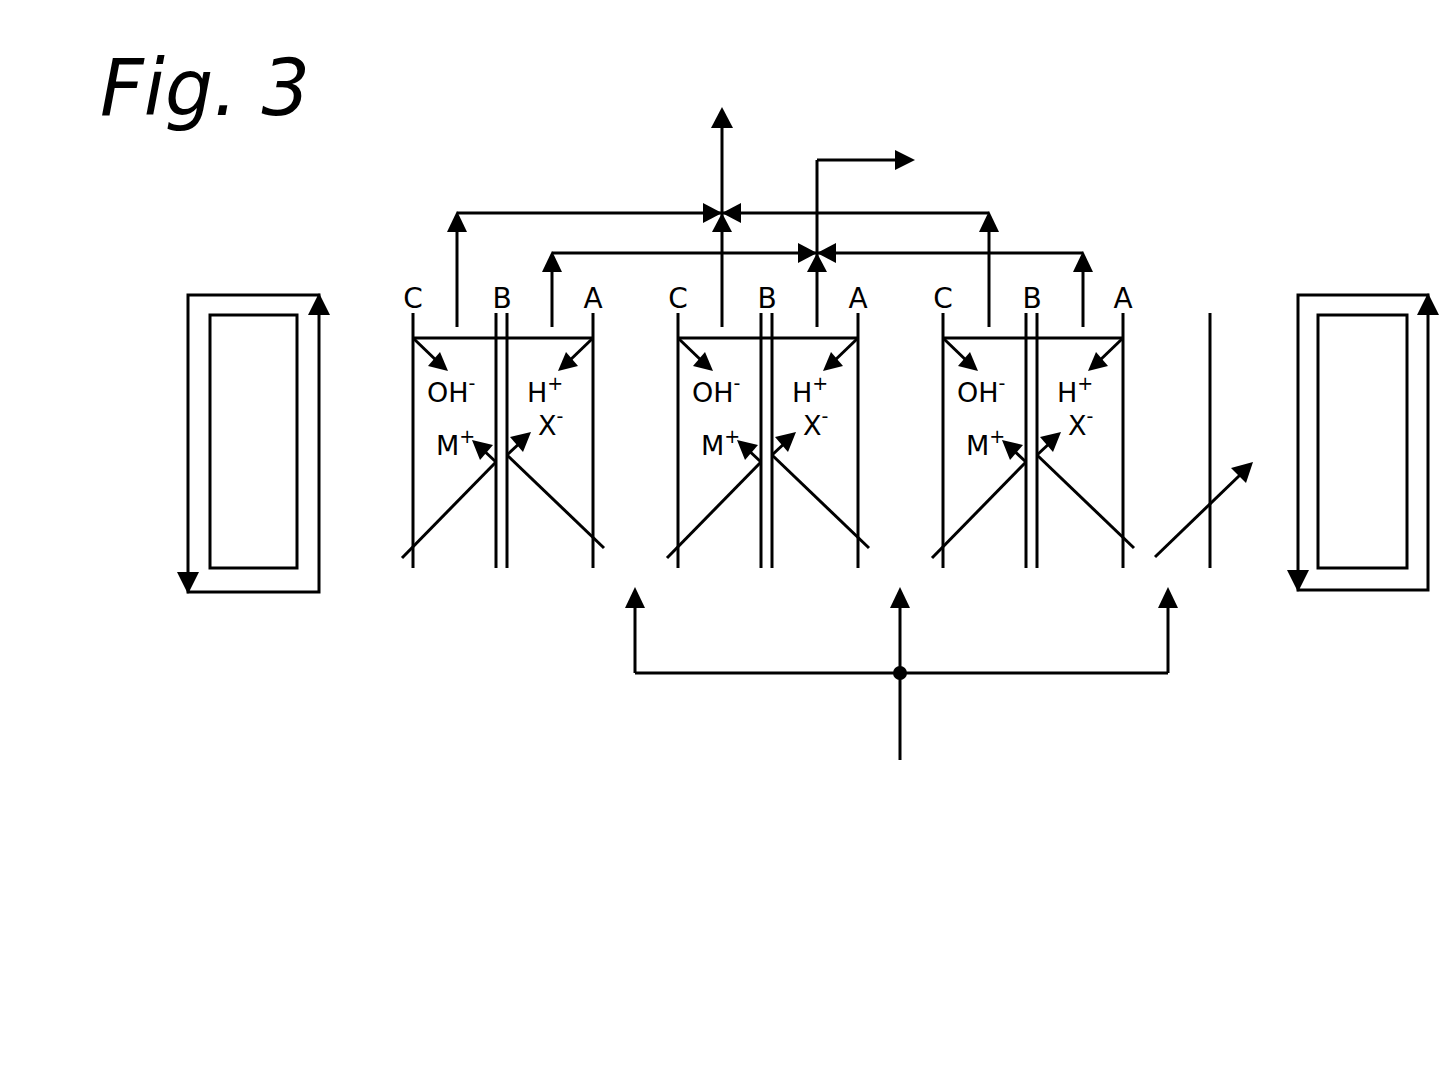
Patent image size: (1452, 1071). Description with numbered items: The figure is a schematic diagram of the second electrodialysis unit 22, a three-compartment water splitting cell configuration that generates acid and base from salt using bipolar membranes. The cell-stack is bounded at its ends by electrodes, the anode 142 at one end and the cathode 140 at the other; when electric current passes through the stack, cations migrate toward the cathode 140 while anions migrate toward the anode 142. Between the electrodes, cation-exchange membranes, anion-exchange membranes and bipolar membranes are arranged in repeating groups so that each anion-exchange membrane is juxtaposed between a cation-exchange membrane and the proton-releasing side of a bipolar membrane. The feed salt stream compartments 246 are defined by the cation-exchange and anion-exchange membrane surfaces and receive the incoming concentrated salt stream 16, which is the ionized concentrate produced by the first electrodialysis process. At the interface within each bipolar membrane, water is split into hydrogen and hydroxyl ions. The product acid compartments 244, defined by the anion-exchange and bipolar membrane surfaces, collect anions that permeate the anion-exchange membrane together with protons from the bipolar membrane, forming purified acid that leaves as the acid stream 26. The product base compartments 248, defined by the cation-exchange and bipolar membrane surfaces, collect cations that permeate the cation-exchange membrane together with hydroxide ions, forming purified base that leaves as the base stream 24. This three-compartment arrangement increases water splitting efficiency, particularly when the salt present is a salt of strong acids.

The first treated stream 16 is at (901, 690).
The second electrodialysis unit 22 is at (478, 756).
The base stream 24 is at (723, 198).
The acid stream 26 is at (817, 235).
The cathode 140 is at (1360, 545).
The anode 142 is at (250, 547).
The product acid compartment 244 is at (542, 547).
The feed salt stream compartment 246 is at (1188, 545).
The product base compartment 248 is at (457, 547).